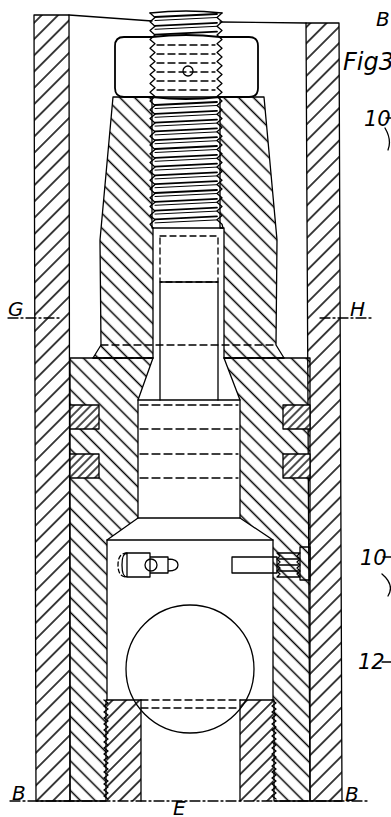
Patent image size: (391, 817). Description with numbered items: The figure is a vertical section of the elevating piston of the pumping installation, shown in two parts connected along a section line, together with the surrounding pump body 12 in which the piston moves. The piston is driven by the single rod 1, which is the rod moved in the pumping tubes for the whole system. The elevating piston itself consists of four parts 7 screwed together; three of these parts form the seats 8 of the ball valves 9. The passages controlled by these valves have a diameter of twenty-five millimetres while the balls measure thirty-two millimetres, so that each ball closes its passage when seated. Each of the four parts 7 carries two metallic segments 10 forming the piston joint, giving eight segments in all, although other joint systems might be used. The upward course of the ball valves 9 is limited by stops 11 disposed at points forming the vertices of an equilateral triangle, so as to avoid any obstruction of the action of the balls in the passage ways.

The rod 1 is at (219, 22).
The parts of the elevating piston 7 is at (82, 385).
The seats 8 is at (128, 735).
The ball valves 9 is at (190, 669).
The metallic segments 10 is at (72, 466).
The stops 11 is at (232, 565).
The pump body 12 is at (42, 216).